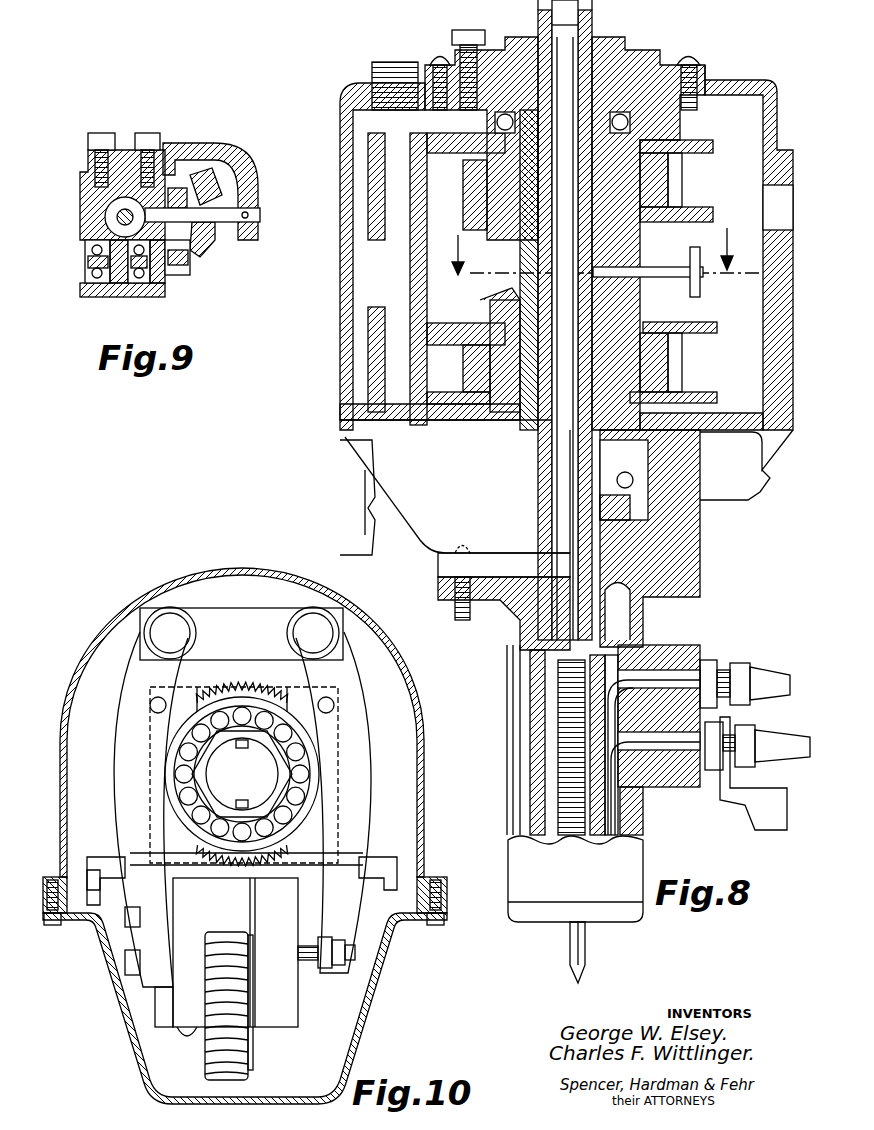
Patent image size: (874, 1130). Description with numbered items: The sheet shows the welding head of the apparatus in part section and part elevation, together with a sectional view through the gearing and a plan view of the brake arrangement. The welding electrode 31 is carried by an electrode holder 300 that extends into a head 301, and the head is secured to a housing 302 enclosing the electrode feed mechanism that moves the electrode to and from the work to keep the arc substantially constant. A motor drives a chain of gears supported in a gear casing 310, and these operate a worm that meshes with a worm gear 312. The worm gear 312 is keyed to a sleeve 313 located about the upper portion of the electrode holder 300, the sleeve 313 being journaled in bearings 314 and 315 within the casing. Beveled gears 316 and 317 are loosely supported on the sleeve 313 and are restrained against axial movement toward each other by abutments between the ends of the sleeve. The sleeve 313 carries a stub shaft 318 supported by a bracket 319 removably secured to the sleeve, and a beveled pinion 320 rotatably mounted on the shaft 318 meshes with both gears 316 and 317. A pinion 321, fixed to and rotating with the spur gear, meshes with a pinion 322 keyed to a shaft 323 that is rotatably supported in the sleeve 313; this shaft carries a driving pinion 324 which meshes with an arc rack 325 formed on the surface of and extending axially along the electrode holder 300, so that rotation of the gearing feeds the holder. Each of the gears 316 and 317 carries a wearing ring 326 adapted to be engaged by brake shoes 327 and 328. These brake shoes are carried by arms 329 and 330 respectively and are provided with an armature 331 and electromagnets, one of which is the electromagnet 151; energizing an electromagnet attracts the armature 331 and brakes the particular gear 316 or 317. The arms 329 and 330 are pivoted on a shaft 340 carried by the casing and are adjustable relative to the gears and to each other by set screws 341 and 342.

In FIG. 8, the welding electrode 31 is at (586, 952).
In FIG. 10, the electromagnet 151 is at (252, 1070).
In FIG. 8, the electrode holder 300 is at (552, 418).
In FIG. 9, the electrode holder 300 is at (104, 218).
In FIG. 8, the head 301 is at (512, 855).
In FIG. 8, the housing 302 is at (424, 533).
In FIG. 8, the gear casing 310 is at (347, 238).
In FIG. 8, the worm gear 312 is at (608, 447).
In FIG. 8, the sleeve 313 is at (530, 287).
In FIG. 9, the sleeve 313 is at (80, 196).
In FIG. 8, the bearing 314 is at (638, 123).
In FIG. 8, the bearing 315 is at (695, 512).
In FIG. 8, the beveled gear 316 is at (650, 170).
In FIG. 8, the beveled gear 317 is at (640, 372).
In FIG. 8, the stub shaft 318 is at (686, 288).
In FIG. 9, the stub shaft 318 is at (258, 213).
In FIG. 8, the bracket 319 is at (702, 283).
In FIG. 9, the bracket 319 is at (252, 170).
In FIG. 8, the beveled pinion 320 is at (688, 330).
In FIG. 9, the beveled pinion 320 is at (213, 250).
In FIG. 8, the pinion 321 is at (685, 222).
In FIG. 9, the pinion 321 is at (178, 188).
In FIG. 9, the pinion 322 is at (185, 278).
In FIG. 9, the shaft 323 is at (85, 258).
In FIG. 9, the driving pinion 324 is at (125, 285).
In FIG. 8, the arc rack 325 is at (556, 688).
In FIG. 8, the wearing ring 326 is at (468, 200).
In FIG. 10, the brake shoe 327 is at (300, 842).
In FIG. 10, the brake shoe 328 is at (190, 843).
In FIG. 8, the arm 329 is at (714, 147).
In FIG. 10, the arm 329 is at (358, 732).
In FIG. 10, the arm 330 is at (128, 732).
In FIG. 10, the armature 331 is at (292, 1001).
In FIG. 8, the shaft 340 is at (395, 292).
In FIG. 10, the set screw 341 is at (357, 952).
In FIG. 10, the set screw 342 is at (95, 905).